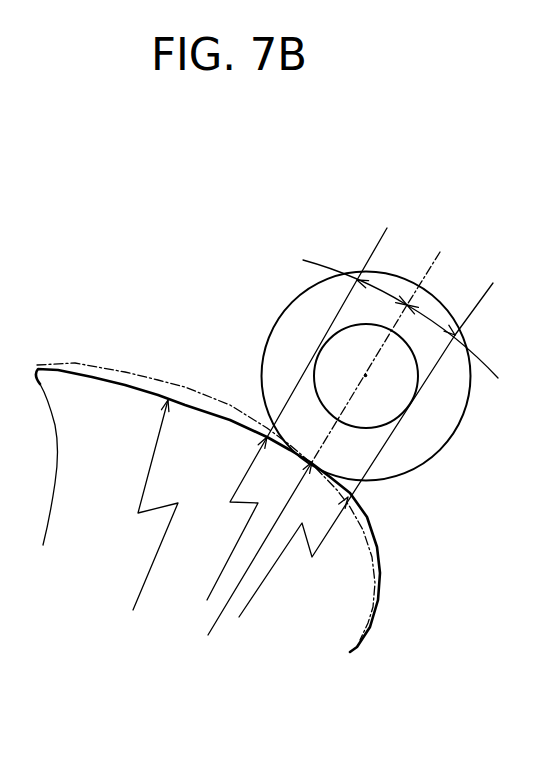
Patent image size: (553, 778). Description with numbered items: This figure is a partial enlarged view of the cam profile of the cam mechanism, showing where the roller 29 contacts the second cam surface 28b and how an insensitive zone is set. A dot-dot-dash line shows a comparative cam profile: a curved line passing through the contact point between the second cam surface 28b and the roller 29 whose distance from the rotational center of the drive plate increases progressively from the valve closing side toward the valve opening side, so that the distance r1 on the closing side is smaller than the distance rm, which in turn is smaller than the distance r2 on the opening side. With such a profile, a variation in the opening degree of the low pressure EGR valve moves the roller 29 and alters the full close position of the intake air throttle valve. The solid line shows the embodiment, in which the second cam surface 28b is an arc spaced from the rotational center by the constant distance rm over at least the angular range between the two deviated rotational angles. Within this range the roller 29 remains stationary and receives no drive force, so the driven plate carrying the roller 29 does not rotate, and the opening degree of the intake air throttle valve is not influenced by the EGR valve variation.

The roller 29 is at (284, 327).
The second cam surface 28b is at (373, 513).
The distance r1 is at (347, 476).
The distance r2 is at (282, 440).
The distance rm is at (270, 470).